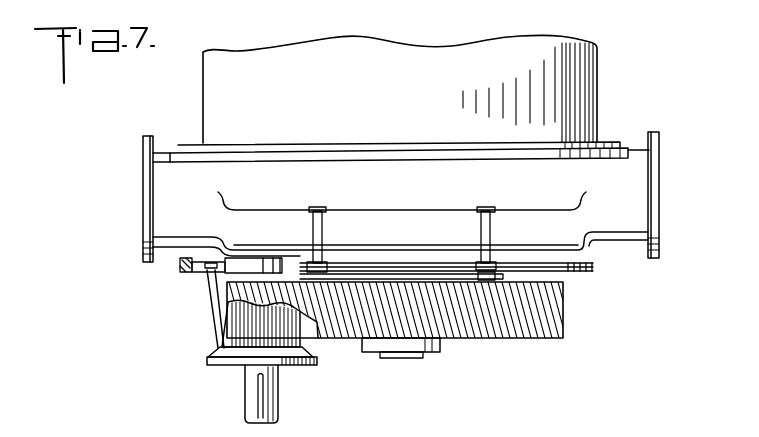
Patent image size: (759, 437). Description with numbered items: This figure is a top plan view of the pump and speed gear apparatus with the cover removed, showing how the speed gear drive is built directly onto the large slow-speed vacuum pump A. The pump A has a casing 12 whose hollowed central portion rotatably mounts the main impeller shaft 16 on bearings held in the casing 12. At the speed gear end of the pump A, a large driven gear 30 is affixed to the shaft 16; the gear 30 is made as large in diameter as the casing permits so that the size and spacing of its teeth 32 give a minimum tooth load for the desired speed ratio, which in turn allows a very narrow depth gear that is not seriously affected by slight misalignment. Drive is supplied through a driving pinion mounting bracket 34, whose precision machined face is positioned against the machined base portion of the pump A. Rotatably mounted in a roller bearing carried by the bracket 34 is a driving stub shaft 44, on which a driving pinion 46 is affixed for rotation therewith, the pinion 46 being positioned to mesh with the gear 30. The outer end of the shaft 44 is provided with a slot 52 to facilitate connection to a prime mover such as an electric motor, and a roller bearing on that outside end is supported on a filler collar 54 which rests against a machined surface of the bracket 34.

The vacuum pump A is at (414, 39).
The casing 12 is at (586, 109).
The main impeller shaft 16 is at (411, 358).
The driven gear 30 is at (567, 321).
The gear teeth 32 is at (462, 325).
The driving pinion mounting bracket 34 is at (200, 315).
The driving stub shaft 44 is at (247, 373).
The driving pinion 46 is at (247, 322).
The slot 52 is at (262, 394).
The filler collar 54 is at (318, 360).